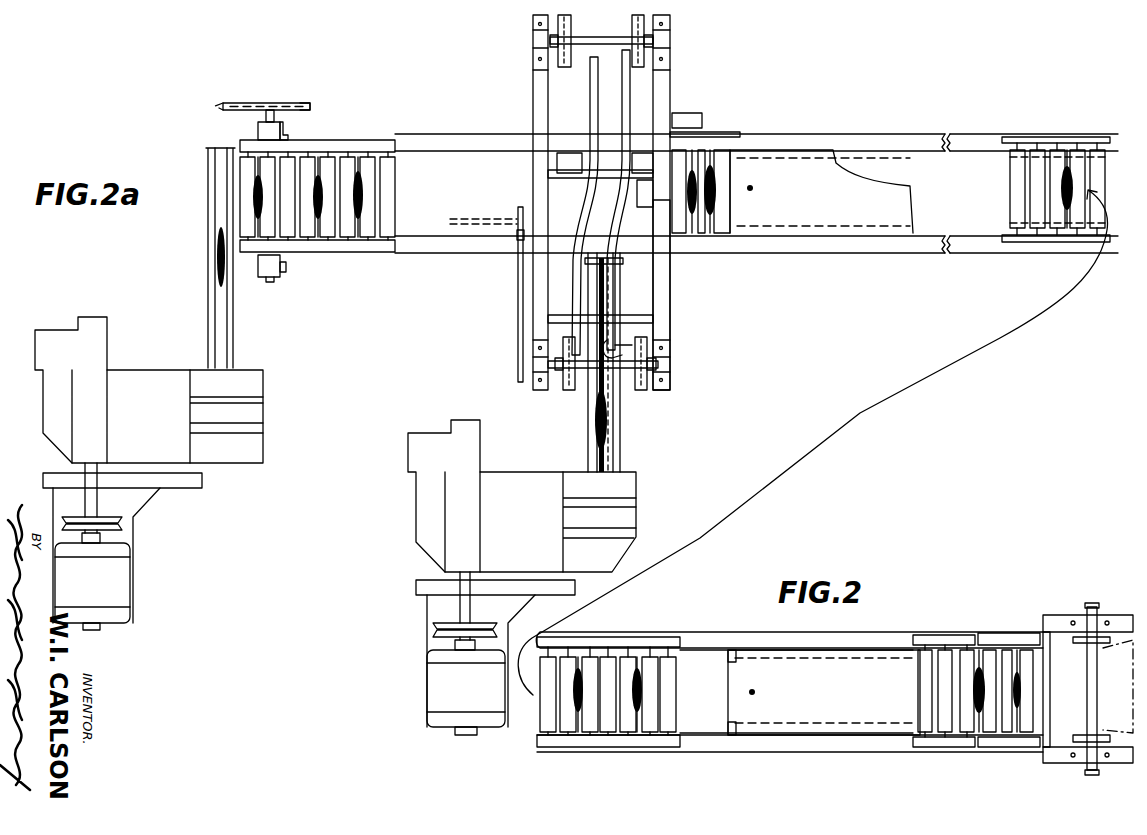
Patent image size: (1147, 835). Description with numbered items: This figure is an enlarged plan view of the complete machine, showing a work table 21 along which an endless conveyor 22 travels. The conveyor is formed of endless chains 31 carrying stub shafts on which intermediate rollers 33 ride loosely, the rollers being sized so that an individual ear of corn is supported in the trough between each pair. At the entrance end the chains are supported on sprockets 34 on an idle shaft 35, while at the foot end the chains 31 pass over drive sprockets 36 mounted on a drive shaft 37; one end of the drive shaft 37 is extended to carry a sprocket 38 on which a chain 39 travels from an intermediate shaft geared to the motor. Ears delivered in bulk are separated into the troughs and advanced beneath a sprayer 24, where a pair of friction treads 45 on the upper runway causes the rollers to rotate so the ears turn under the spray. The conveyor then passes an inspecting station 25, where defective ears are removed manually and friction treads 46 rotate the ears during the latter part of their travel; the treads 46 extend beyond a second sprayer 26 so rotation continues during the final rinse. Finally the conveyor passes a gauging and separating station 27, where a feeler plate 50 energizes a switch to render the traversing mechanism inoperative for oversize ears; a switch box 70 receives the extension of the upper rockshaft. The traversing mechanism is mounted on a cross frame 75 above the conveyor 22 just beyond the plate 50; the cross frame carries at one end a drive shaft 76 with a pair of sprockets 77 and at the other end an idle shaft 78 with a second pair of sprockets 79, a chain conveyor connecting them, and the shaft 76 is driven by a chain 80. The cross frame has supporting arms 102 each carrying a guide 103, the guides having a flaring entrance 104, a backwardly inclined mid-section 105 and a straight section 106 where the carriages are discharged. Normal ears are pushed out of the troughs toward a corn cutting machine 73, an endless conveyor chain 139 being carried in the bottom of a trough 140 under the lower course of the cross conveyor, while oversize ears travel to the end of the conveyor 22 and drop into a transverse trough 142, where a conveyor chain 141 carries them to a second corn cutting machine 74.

In FIG. 2, the work table 21 is at (893, 640).
In FIG. 2, the endless conveyor 22 is at (957, 745).
In FIG. 2, the sprayer 24 is at (810, 713).
In FIG. 2, the inspecting station 25 is at (640, 640).
In FIG. 2A, the second sprayer 26 is at (827, 178).
In FIG. 2A, the gauging and separating station 27 is at (756, 177).
In FIG. 2A, the endless chains 31 is at (387, 142).
In FIG. 2, the endless chains 31 is at (682, 640).
In FIG. 2, the intermediate rollers 33 is at (1010, 717).
In FIG. 2, the sprockets 34 is at (1080, 640).
In FIG. 2, the idle shaft 35 is at (1092, 698).
In FIG. 2A, the drive sprockets 36 is at (258, 142).
In FIG. 2A, the drive shaft 37 is at (277, 118).
In FIG. 2A, the sprocket 38 is at (293, 101).
In FIG. 2A, the chain 39 is at (312, 106).
In FIG. 2, the friction treads 45 is at (728, 723).
In FIG. 2A, the friction treads 46 is at (970, 227).
In FIG. 2A, the feeler plate 50 is at (645, 197).
In FIG. 2A, the switch box 70 is at (693, 118).
In FIG. 2A, the corn cutting machine 73 is at (512, 480).
In FIG. 2A, the second corn cutting machine 74 is at (147, 377).
In FIG. 2A, the cross frame 75 is at (662, 284).
In FIG. 2A, the drive shaft 76 is at (623, 370).
In FIG. 2A, the sprockets 77 is at (570, 390).
In FIG. 2A, the idle shaft 78 is at (606, 40).
In FIG. 2A, the sprockets 79 is at (533, 35).
In FIG. 2A, the chain 80 is at (518, 331).
In FIG. 2A, the supporting arms 102 is at (567, 173).
In FIG. 2A, the guide 103 is at (597, 108).
In FIG. 2A, the flaring entrance 104 is at (632, 345).
In FIG. 2A, the backwardly inclined mid-section 105 is at (587, 210).
In FIG. 2A, the straight section 106 is at (625, 93).
In FIG. 2A, the endless conveyor chain 139 is at (605, 445).
In FIG. 2A, the trough 140 is at (585, 422).
In FIG. 2A, the conveyor chain 141 is at (230, 333).
In FIG. 2A, the trough 142 is at (208, 260).